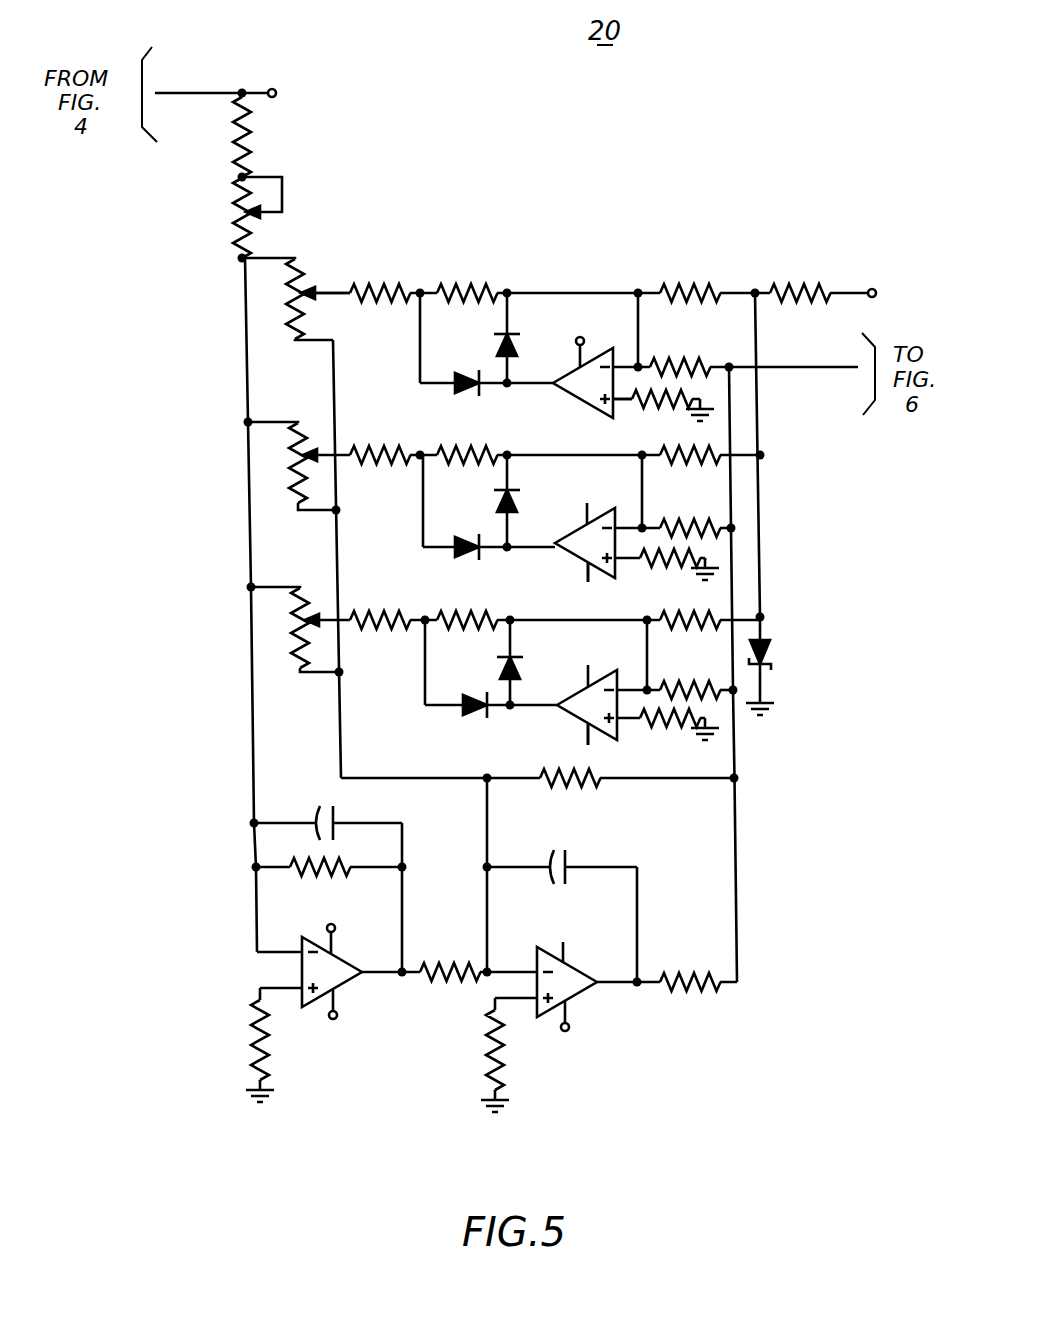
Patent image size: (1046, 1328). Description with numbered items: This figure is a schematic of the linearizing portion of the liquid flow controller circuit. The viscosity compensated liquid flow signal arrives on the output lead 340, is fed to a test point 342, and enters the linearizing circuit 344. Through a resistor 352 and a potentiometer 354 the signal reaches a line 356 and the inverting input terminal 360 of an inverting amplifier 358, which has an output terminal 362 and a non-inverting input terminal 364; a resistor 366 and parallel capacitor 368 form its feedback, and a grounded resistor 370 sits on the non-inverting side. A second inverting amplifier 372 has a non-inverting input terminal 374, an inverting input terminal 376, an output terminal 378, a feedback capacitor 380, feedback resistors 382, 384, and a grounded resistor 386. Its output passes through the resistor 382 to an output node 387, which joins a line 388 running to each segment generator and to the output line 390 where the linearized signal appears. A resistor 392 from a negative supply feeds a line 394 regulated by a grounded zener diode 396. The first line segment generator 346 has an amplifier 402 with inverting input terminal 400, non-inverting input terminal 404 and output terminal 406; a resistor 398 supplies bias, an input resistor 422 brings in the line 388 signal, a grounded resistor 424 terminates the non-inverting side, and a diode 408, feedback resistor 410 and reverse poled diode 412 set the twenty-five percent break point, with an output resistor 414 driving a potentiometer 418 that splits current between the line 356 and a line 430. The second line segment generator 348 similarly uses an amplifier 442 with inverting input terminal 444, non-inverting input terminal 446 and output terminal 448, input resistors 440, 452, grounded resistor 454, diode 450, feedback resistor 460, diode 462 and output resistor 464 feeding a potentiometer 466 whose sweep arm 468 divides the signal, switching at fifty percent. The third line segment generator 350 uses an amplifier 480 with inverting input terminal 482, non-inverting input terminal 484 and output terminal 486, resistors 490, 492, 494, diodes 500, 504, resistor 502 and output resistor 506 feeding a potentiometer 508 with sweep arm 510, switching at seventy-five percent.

The output lead 340 is at (208, 92).
The test point 342 is at (274, 88).
The resistor 352 is at (251, 140).
The potentiometer 354 is at (240, 208).
The line 356 is at (246, 310).
The potentiometer 418 is at (303, 280).
The linearizing circuit 344 is at (385, 290).
The output resistor 414 is at (393, 290).
The feedback resistor 410 is at (483, 290).
The diode 408 is at (496, 333).
The reverse poled diode 412 is at (460, 387).
The output terminal 406 is at (517, 386).
The line segment generator 346 is at (604, 346).
The inverting input terminal 400 is at (639, 362).
The input resistor 422 is at (705, 360).
The non-inverting input terminal 404 is at (620, 406).
The amplifier 402 is at (576, 406).
The resistor 398 is at (702, 287).
The resistor 392 is at (805, 287).
The output line 390 is at (768, 365).
The grounded resistor 424 is at (735, 398).
The line 394 is at (763, 440).
The line 430 is at (335, 405).
The potentiometer 466 is at (304, 428).
The sweep arm 468 is at (324, 468).
The output resistor 464 is at (370, 454).
The feedback resistor 460 is at (466, 454).
The diode 450 is at (496, 493).
The diode 462 is at (477, 551).
The output terminal 448 is at (546, 540).
The line segment generator 348 is at (598, 510).
The input resistor 440 is at (675, 464).
The inverting input terminal 444 is at (645, 526).
The input resistor 452 is at (740, 527).
The non-inverting input terminal 446 is at (610, 574).
The grounded resistor 454 is at (714, 560).
The amplifier 442 is at (582, 570).
The resistor 490 is at (742, 617).
The potentiometer 508 is at (303, 590).
The sweep arm 510 is at (322, 620).
The output resistor 506 is at (386, 617).
The resistor 502 is at (476, 617).
The diode 500 is at (498, 658).
The diode 504 is at (466, 714).
The output terminal 486 is at (545, 700).
The line segment generator 350 is at (599, 672).
The inverting input terminal 482 is at (651, 689).
The resistor 492 is at (740, 690).
The resistor 494 is at (714, 726).
The amplifier 480 is at (575, 740).
The non-inverting input terminal 484 is at (589, 775).
The resistor 384 is at (589, 781).
The zener diode 396 is at (771, 662).
The line 388 is at (742, 752).
The output node 387 is at (742, 788).
The capacitor 368 is at (346, 818).
The resistor 366 is at (366, 866).
The output terminal 362 is at (365, 968).
The inverting input terminal 360 is at (264, 950).
The inverting amplifier 358 is at (297, 1010).
The non-inverting input terminal 364 is at (293, 967).
The grounded resistor 370 is at (251, 1045).
The inverting input terminal 376 is at (537, 955).
The output terminal 378 is at (600, 965).
The capacitor 380 is at (566, 860).
The resistor 382 is at (692, 978).
The second inverting amplifier 372 is at (600, 988).
The resistor 386 is at (492, 1040).
The non-inverting input terminal 374 is at (514, 1003).